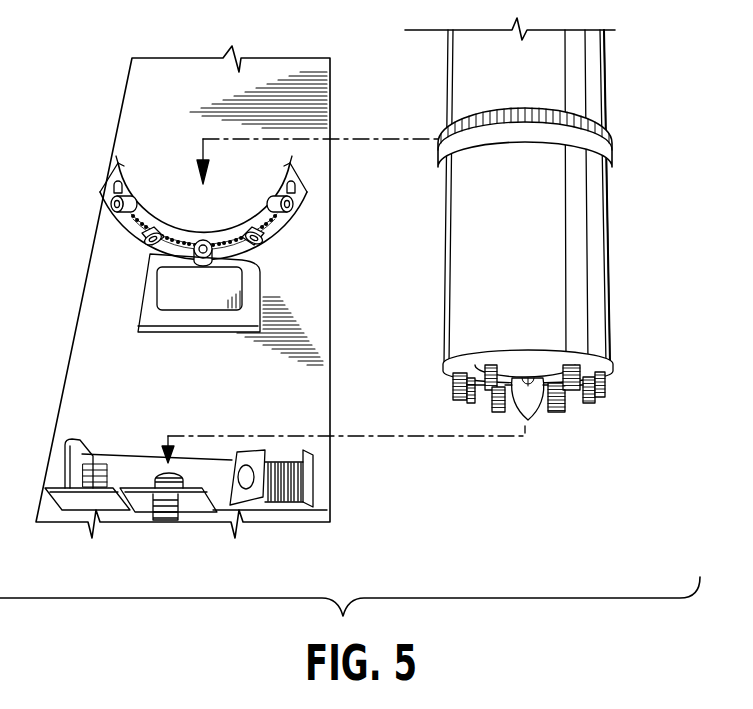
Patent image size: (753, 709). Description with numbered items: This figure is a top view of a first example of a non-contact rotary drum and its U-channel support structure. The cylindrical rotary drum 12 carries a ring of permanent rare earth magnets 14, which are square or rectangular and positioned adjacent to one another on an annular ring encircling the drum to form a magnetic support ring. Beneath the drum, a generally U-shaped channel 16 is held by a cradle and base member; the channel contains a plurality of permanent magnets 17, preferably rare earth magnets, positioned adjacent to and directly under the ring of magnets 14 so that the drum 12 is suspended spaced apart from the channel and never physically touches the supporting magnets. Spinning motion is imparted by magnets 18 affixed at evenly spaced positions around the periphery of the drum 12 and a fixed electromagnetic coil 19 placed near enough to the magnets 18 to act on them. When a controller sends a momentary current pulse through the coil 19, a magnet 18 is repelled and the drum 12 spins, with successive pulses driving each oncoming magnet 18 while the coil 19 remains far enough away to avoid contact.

The rotary drum 12 is at (543, 57).
The permanent rare earth magnets 14 is at (543, 123).
The U-shaped channel 16 is at (143, 212).
The permanent magnets 17 is at (190, 252).
The magnets 18 is at (565, 407).
The electromagnetic coil 19 is at (280, 490).